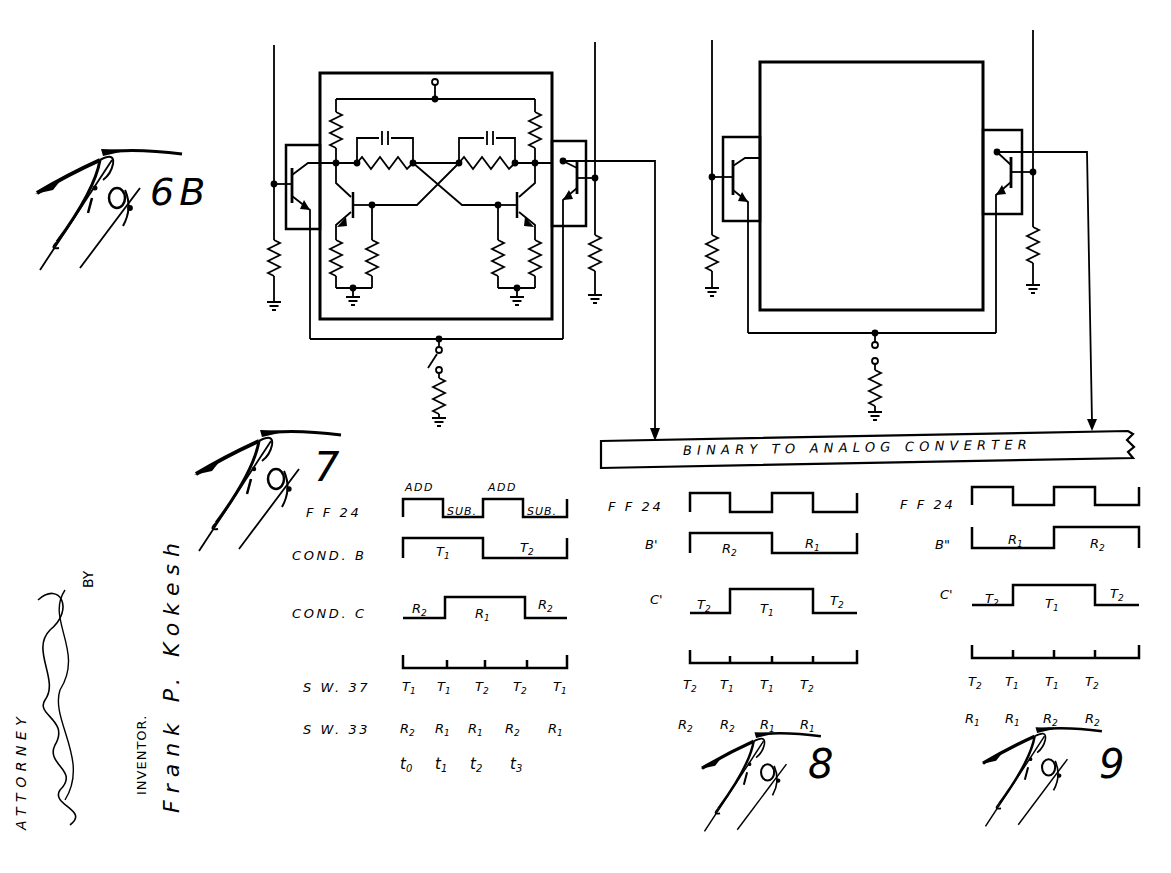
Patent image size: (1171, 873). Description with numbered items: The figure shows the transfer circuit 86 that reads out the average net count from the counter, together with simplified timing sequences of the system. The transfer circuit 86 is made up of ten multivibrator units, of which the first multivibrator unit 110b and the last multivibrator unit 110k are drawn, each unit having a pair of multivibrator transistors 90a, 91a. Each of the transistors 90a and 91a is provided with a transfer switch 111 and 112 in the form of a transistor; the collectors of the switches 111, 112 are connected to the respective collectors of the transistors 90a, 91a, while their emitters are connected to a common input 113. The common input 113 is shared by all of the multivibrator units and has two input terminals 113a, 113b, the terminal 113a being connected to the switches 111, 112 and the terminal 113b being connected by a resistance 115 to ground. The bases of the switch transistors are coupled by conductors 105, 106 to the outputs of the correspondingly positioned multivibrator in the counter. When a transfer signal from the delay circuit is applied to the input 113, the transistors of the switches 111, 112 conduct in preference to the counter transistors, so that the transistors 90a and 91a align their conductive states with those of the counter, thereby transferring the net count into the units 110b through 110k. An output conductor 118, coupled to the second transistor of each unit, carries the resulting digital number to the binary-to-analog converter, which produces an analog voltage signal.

The conductor 105 is at (274, 77).
The conductor 106 is at (595, 76).
The multivibrator unit 110b is at (365, 73).
The multivibrator unit 110k is at (825, 62).
The transfer switch 111 is at (298, 145).
The transfer switch 112 is at (568, 141).
The multivibrator transistor 90a is at (357, 196).
The multivibrator transistor 91a is at (513, 196).
The transfer circuit 86 is at (314, 353).
The common input 113 is at (426, 362).
The input terminal 113a is at (444, 354).
The input terminal 113b is at (444, 373).
The resistance 115 is at (445, 399).
The output conductor 118 is at (655, 397).